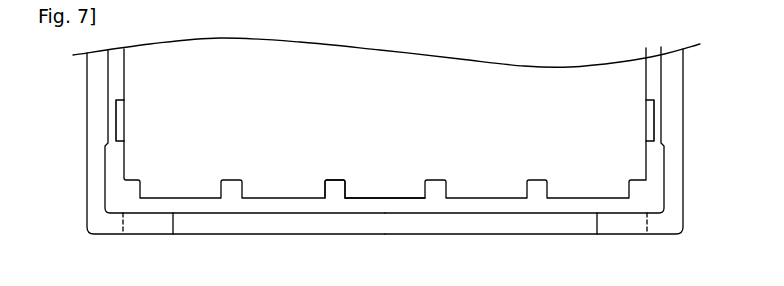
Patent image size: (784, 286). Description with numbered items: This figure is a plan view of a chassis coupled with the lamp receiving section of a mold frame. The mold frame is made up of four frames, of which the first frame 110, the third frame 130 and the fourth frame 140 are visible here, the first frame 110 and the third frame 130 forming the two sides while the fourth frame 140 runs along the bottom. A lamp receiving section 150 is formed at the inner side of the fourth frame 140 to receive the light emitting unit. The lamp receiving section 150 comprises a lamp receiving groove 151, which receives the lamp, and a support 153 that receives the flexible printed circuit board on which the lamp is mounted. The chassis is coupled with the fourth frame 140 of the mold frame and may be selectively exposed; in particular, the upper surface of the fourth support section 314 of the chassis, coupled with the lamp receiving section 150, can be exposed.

The first frame 110 is at (100, 175).
The third frame 130 is at (671, 175).
The fourth frame 140 is at (147, 226).
The lamp receiving section 150 is at (317, 125).
The lamp receiving groove 151 is at (318, 190).
The support 153 is at (387, 203).
The fourth support section 314 is at (440, 225).